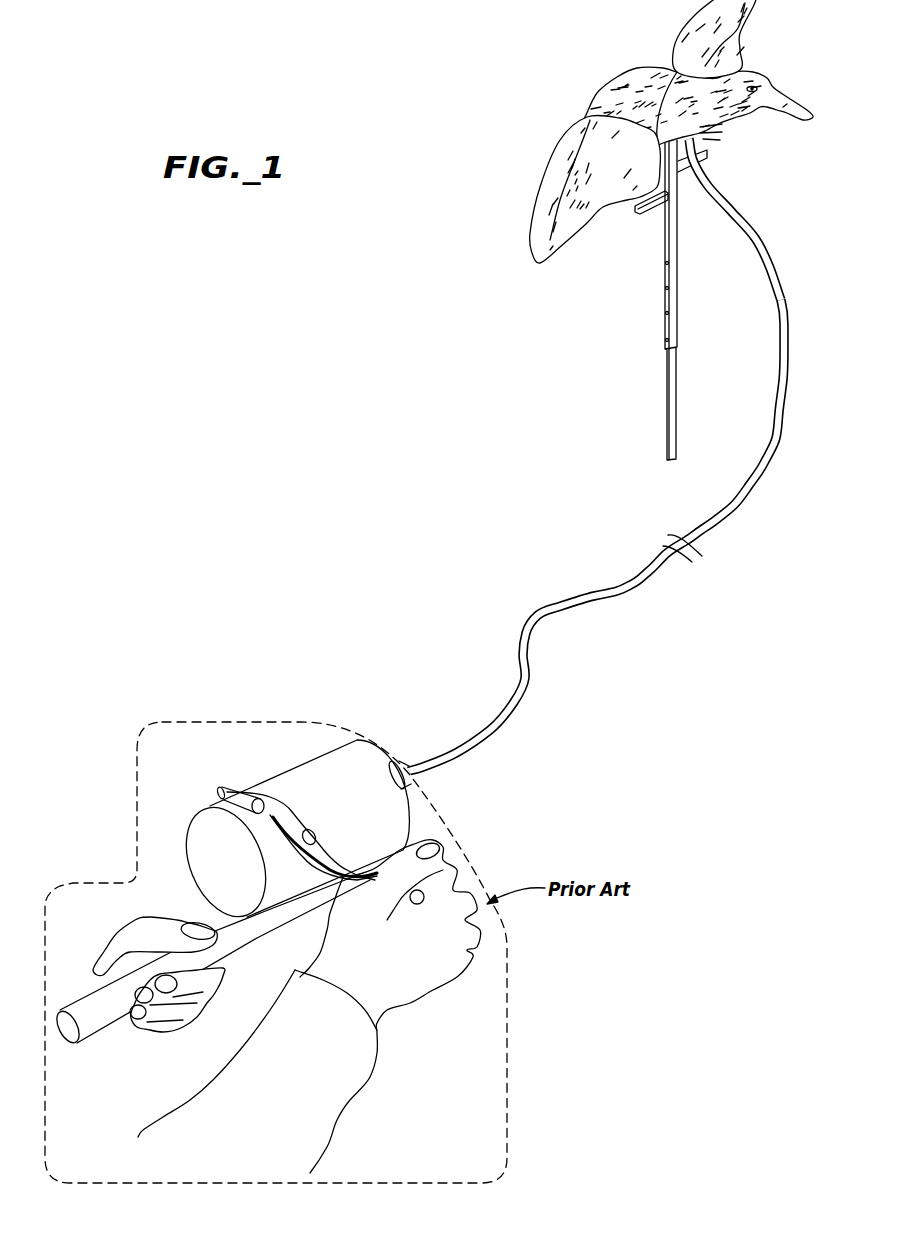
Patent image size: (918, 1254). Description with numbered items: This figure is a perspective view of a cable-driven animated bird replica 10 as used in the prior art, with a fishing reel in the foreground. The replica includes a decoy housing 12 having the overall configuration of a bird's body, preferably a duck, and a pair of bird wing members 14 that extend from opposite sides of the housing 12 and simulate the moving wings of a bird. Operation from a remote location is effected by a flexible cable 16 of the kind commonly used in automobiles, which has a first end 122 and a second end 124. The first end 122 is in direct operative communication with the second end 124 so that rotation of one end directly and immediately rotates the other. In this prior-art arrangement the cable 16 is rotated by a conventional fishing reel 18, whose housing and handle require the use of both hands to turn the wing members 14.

The cable-driven animated bird replica 10 is at (440, 398).
The decoy housing 12 is at (613, 83).
The bird wing members 14 is at (740, 57).
The flexible cable 16 is at (778, 340).
The fishing reel 18 is at (312, 752).
The first end 122 is at (712, 180).
The second end 124 is at (440, 768).